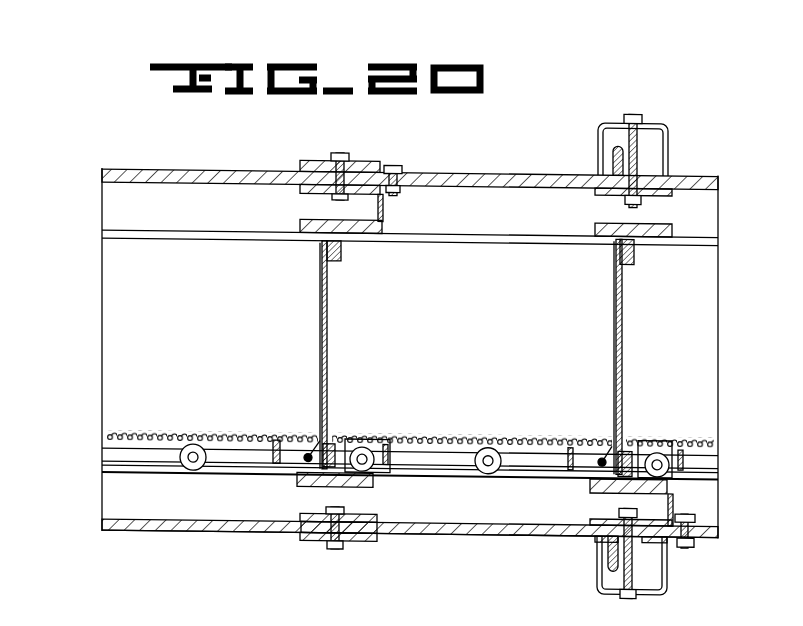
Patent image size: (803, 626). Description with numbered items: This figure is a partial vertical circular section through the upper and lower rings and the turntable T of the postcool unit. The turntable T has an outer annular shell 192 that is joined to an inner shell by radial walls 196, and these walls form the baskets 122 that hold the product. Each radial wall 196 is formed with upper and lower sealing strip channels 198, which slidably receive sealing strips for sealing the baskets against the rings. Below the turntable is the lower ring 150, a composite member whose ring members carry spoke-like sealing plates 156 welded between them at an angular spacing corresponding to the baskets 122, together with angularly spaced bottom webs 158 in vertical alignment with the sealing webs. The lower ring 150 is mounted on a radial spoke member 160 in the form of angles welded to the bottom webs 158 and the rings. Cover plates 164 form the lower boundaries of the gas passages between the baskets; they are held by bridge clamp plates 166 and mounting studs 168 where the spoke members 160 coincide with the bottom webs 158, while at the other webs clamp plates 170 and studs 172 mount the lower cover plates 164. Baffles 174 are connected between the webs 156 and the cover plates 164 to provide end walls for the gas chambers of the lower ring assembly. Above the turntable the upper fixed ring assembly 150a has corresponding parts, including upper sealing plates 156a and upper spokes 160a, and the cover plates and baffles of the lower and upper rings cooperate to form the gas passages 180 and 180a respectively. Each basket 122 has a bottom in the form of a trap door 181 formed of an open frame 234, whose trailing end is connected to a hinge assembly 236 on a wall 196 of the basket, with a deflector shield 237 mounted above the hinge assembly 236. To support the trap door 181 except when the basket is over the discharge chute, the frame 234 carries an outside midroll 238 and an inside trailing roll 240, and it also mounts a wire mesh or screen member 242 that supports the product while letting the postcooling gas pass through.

The turntable T is at (157, 167).
The basket 122 is at (322, 288).
The lower ring 150 is at (118, 487).
The upper fixed ring assembly 150a is at (152, 195).
The sealing plate 156 is at (335, 489).
The upper sealing plate 156a is at (595, 226).
The bottom web 158 is at (360, 517).
The radial spoke member 160 is at (612, 552).
The upper spoke 160a is at (612, 160).
The cover plate 164 is at (188, 524).
The bridge clamp plate 166 is at (597, 569).
The mounting stud 168 is at (625, 582).
The clamp plate 170 is at (310, 540).
The stud 172 is at (340, 547).
The baffle 174 is at (674, 505).
The gas passage 180 is at (203, 513).
The gas passage 180a is at (265, 221).
The trap door 181 is at (238, 432).
The outer annular shell 192 is at (215, 304).
The radial wall 196 is at (322, 319).
The sealing strip channel 198 is at (341, 249).
The open frame 234 is at (118, 457).
The hinge assembly 236 is at (313, 474).
The deflector shield 237 is at (318, 442).
The outside midroll 238 is at (193, 450).
The inside trailing roll 240 is at (362, 450).
The wire mesh or screen member 242 is at (146, 435).